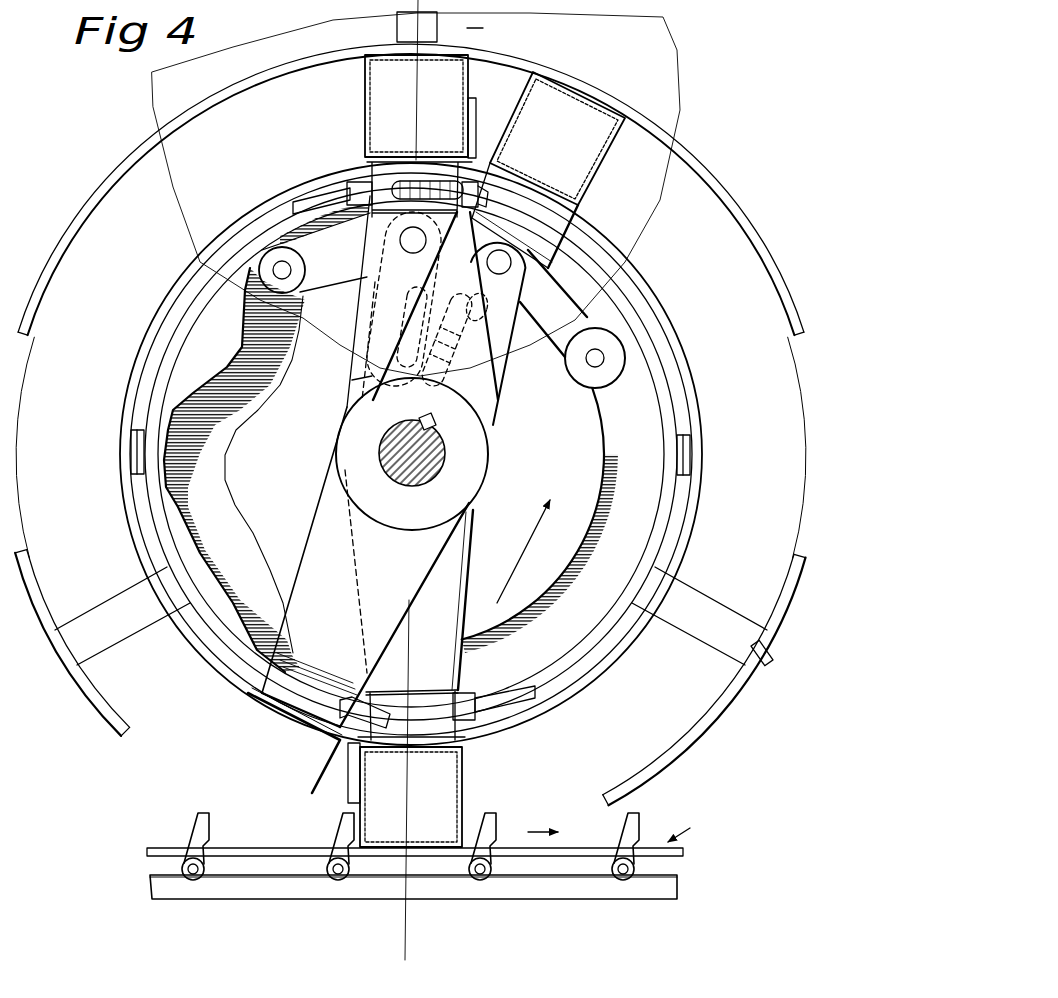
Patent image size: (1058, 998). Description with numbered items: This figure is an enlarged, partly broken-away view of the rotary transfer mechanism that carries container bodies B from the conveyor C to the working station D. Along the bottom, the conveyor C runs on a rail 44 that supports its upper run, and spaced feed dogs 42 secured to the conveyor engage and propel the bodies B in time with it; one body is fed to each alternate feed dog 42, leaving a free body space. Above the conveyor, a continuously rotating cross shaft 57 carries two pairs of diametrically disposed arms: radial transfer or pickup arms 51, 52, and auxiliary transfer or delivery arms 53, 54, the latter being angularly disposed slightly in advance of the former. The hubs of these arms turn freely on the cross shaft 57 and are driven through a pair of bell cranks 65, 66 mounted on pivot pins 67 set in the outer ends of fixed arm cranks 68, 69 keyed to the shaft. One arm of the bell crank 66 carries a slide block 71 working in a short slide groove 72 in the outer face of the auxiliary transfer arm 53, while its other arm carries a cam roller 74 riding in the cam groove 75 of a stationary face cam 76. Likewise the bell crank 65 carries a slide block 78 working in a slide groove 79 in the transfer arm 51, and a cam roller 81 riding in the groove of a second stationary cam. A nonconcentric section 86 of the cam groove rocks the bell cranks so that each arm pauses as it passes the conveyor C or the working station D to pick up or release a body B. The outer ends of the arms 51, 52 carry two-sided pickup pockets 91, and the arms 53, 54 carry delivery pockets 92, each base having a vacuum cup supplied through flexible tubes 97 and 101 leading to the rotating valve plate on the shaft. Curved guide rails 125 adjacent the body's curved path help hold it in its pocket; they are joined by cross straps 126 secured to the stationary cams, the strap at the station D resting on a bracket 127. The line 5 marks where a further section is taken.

The line 5- 5 is at (462, 22).
The feed dog 42 is at (206, 832).
The rail 44 is at (231, 892).
The transfer arm 51 is at (508, 371).
The transfer arm 52 is at (320, 539).
The auxiliary transfer arm 53 is at (362, 340).
The auxiliary transfer arm 54 is at (455, 620).
The cross shaft 57 is at (423, 477).
The bell crank 65 is at (553, 303).
The bell crank 66 is at (316, 252).
The pivot pin 67 is at (411, 248).
The fixed arm crank 68 is at (482, 399).
The fixed arm crank 69 is at (348, 380).
The slide block 71 is at (447, 340).
The slide groove 72 is at (400, 311).
The cam roller 74 is at (256, 258).
The cam groove 75 is at (232, 498).
The stationary face cam 76 is at (156, 368).
The slide block 78 is at (472, 332).
The slide groove 79 is at (490, 324).
The cam roller 81 is at (605, 381).
The nonconcentric section 86 is at (203, 374).
The pickup pocket 91 is at (510, 128).
The delivery pocket 92 is at (477, 112).
The flexible tube 97 is at (427, 182).
The flexible tube 101 is at (316, 192).
The curved guide rail 125 is at (58, 255).
The cross strap 126 is at (397, 33).
The bracket 127 is at (492, 27).
The body B is at (365, 90).
The conveyor C is at (680, 824).
The working station D is at (150, 118).